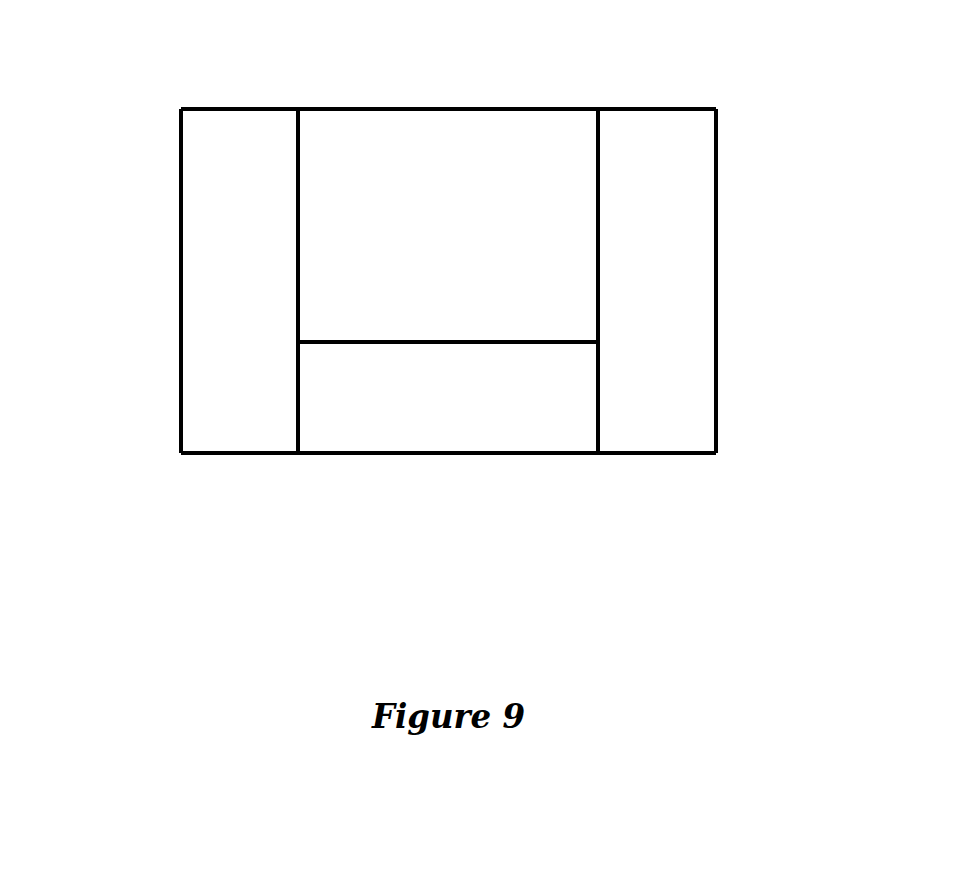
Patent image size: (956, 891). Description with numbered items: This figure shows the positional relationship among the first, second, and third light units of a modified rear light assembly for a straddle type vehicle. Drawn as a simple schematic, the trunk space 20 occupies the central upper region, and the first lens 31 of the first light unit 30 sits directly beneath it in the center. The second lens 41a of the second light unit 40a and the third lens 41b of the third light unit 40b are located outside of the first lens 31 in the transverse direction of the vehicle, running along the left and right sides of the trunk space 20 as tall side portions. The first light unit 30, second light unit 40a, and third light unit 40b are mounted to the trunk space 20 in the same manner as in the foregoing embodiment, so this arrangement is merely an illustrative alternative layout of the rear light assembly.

The trunk space 20 is at (447, 119).
The first light unit 30 is at (390, 462).
The first lens 31 is at (503, 437).
The second light unit 40a is at (176, 283).
The third light unit 40b is at (724, 283).
The second lens 41a is at (244, 121).
The third lens 41b is at (658, 122).